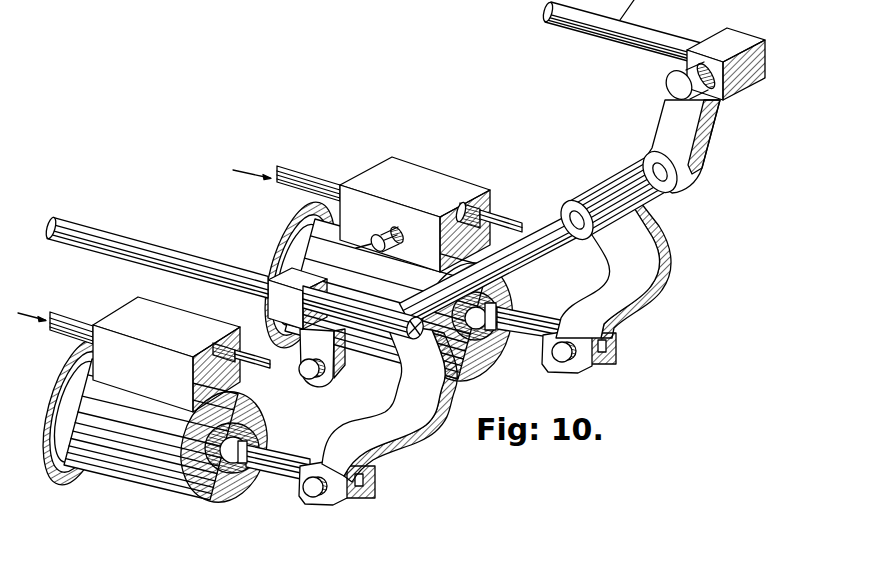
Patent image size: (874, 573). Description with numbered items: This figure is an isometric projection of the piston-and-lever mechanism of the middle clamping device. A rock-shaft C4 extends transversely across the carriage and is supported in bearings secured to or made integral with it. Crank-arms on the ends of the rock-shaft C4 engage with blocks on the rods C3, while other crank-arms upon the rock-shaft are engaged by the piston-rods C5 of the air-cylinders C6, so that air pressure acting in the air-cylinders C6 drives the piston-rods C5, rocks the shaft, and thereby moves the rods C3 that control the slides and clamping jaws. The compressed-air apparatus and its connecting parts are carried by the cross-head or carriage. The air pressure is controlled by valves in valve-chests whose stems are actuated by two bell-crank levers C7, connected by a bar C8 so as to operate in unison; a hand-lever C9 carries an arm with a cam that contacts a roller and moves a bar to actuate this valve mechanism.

The rod C3 is at (178, 248).
The rock-shaft C4 is at (548, 212).
The piston-rod C5 is at (287, 455).
The air-cylinder C6 is at (193, 497).
The bell-crank lever C7 is at (396, 414).
The bar C8 is at (254, 284).
The hand-lever C9 is at (492, 216).